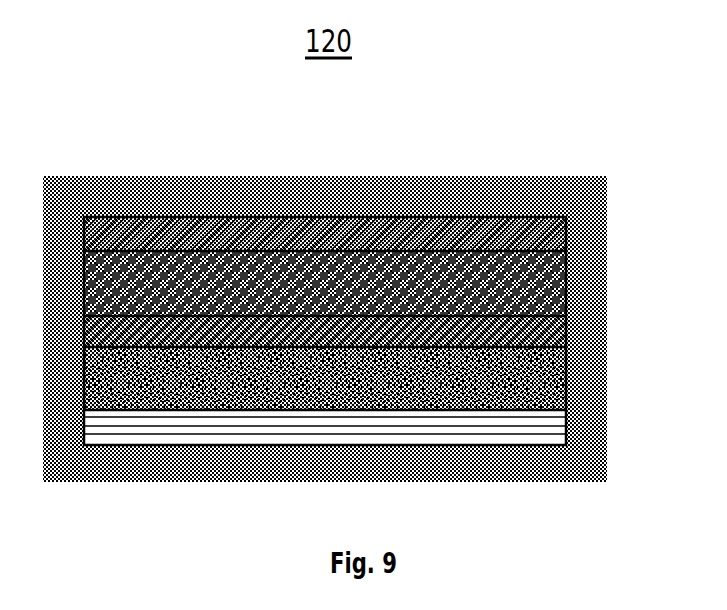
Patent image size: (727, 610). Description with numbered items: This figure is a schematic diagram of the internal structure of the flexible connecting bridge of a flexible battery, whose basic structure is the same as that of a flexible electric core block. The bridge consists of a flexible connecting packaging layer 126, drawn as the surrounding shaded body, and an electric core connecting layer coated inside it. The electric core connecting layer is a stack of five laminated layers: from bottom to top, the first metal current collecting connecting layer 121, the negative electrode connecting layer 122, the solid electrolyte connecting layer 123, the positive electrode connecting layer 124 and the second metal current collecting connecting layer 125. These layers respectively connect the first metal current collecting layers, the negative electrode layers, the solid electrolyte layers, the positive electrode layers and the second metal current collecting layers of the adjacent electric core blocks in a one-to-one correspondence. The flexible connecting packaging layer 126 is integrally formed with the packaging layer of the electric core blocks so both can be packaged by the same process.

The first metal current collecting connecting layer 121 is at (567, 428).
The negative electrode connecting layer 122 is at (567, 381).
The solid electrolyte connecting layer 123 is at (567, 332).
The positive electrode connecting layer 124 is at (567, 277).
The second metal current collecting connecting layer 125 is at (566, 233).
The encapsulating body 126 is at (545, 186).